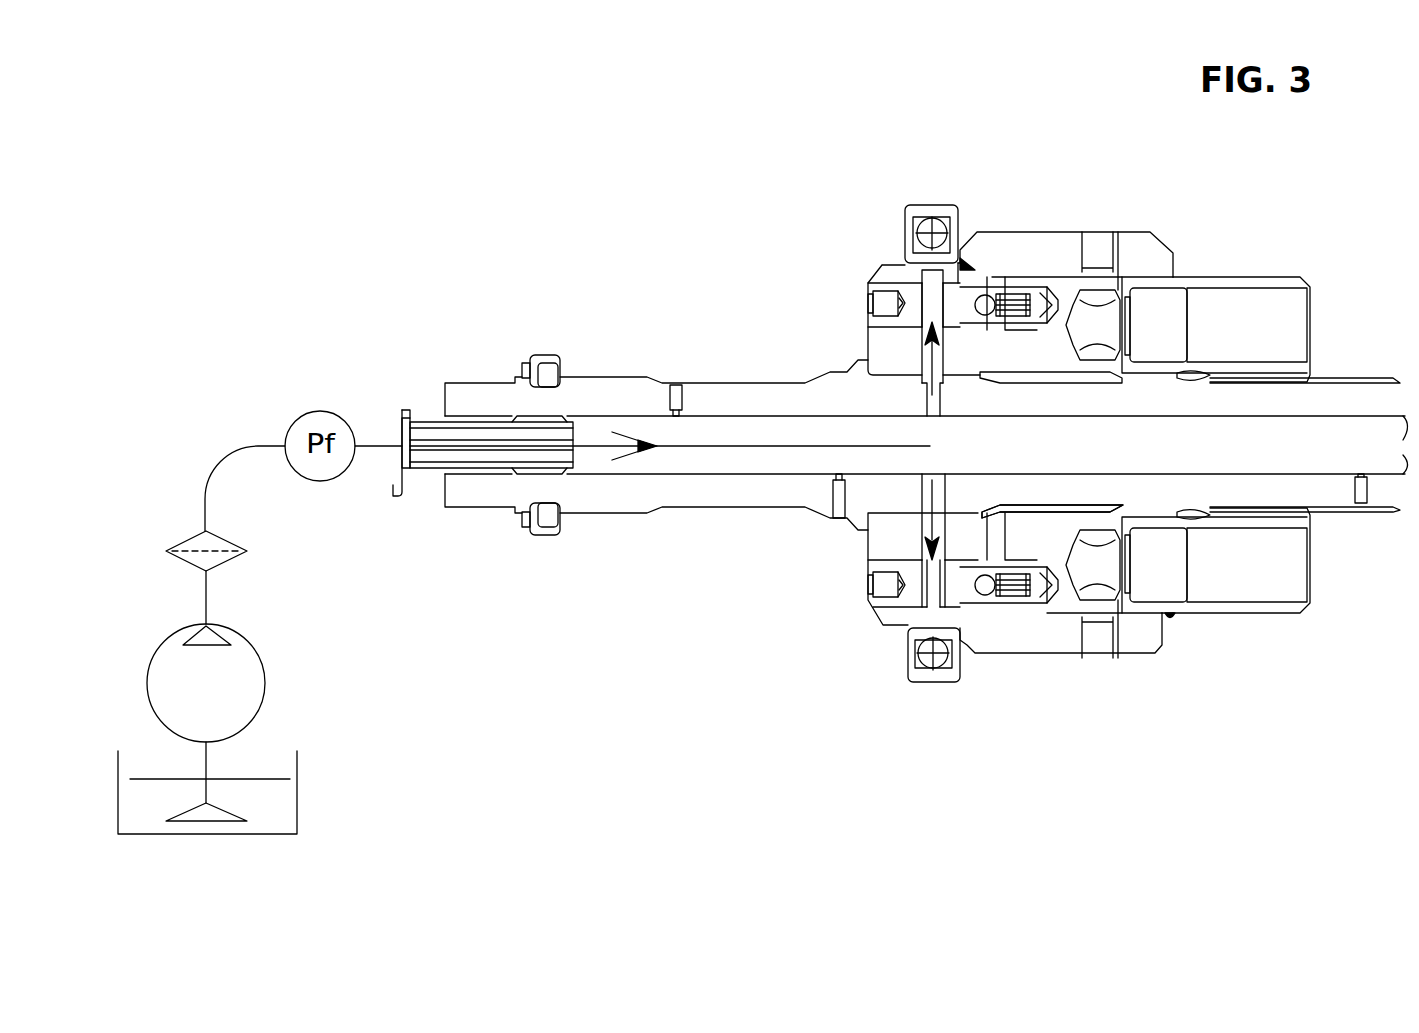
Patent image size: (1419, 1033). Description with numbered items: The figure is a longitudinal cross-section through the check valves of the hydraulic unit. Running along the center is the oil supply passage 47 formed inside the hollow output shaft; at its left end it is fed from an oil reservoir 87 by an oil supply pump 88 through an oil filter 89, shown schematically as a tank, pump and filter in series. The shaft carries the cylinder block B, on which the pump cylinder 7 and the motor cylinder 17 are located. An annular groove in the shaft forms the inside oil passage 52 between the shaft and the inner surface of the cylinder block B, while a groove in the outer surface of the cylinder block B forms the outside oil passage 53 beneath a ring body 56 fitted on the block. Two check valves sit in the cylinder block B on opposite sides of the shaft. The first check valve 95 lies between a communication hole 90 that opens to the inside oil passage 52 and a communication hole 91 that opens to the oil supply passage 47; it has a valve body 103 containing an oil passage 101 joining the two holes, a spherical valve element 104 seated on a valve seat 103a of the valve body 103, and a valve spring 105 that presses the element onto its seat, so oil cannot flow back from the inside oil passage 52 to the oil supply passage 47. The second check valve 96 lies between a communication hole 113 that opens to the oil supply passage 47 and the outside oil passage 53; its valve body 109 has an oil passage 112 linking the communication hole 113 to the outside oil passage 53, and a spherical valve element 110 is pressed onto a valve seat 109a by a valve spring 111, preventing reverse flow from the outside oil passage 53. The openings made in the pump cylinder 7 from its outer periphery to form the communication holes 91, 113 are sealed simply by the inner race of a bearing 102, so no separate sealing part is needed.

The pump cylinder 7 is at (878, 340).
The motor cylinder 17 is at (1228, 285).
The oil supply passage 47 is at (1184, 449).
The inside oil passage 52 is at (1055, 503).
The outside oil passage 53 is at (1007, 280).
The ring body 56 is at (1170, 627).
The oil reservoir 87 is at (299, 803).
The oil supply pump 88 is at (267, 678).
The oil filter 89 is at (221, 533).
The communication hole 90 is at (998, 542).
The communication hole 91 is at (938, 487).
The first check valve 95 is at (866, 614).
The second check valve 96 is at (861, 294).
The oil passage 101 is at (918, 597).
The bearing 102 is at (916, 204).
The valve body 103 is at (880, 562).
The valve seat 103a is at (988, 596).
The spherical valve element 104 is at (990, 597).
The valve spring 105 is at (1018, 607).
The valve body 109 is at (882, 266).
The valve seat 109a is at (952, 280).
The spherical valve element 110 is at (980, 294).
The valve spring 111 is at (1027, 287).
The oil passage 112 is at (908, 287).
The communication hole 113 is at (922, 368).
The cylinder block B is at (1288, 259).